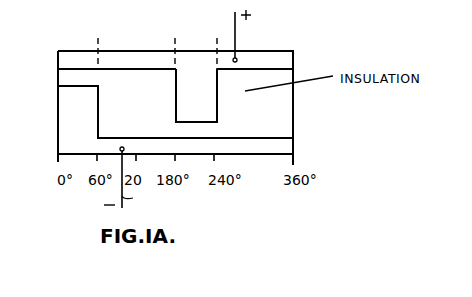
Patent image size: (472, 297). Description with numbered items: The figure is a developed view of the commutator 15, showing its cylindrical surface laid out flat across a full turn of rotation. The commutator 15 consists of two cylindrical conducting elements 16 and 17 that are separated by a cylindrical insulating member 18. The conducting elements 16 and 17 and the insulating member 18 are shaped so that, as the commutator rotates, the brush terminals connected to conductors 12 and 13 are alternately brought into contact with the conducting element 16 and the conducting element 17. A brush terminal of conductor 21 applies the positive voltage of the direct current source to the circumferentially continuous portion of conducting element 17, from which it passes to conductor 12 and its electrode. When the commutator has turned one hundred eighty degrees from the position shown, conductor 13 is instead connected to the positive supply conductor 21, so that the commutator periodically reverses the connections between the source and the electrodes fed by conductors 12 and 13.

The conductor 12 is at (179, 107).
The conductor 13 is at (58, 114).
The commutator 15 is at (322, 68).
The conducting element 16 is at (72, 139).
The conducting element 17 is at (68, 58).
The insulating member 18 is at (294, 88).
The conductor 21 is at (236, 29).